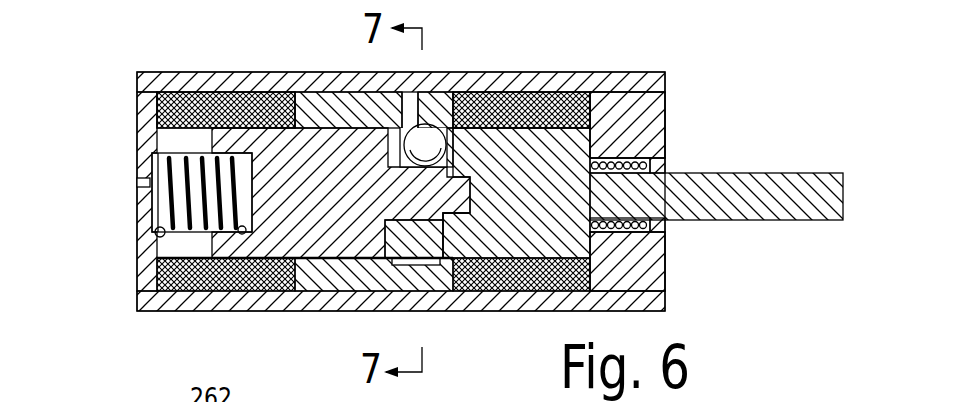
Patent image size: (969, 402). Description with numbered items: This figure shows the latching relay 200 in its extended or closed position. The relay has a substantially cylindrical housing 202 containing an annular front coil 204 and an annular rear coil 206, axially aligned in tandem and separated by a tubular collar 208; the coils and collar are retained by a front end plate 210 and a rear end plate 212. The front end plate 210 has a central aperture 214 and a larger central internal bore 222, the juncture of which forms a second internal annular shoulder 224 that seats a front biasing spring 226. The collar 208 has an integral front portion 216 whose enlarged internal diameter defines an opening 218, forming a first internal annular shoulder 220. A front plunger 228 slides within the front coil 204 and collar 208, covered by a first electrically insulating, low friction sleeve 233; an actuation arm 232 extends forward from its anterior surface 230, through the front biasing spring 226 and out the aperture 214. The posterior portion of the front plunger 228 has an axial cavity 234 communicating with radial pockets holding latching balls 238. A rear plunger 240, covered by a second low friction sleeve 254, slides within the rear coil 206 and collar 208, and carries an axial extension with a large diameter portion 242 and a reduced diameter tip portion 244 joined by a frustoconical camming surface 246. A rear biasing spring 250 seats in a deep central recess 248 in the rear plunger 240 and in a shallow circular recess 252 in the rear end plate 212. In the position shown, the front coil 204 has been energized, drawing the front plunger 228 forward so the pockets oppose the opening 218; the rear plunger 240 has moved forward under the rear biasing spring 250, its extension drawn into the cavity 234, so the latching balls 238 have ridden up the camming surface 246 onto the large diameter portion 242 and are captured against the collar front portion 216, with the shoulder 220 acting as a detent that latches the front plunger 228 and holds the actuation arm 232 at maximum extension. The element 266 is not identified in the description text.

The latching relay 200 is at (133, 46).
The housing 202 is at (665, 95).
The front coil 204 is at (577, 105).
The rear coil 206 is at (173, 92).
The tubular collar 208 is at (313, 100).
The front end plate 210 is at (667, 173).
The rear end plate 212 is at (137, 143).
The central aperture 214 is at (652, 172).
The collar front portion 216 is at (430, 103).
The opening 218 is at (452, 263).
The first internal annular shoulder 220 is at (397, 263).
The central internal bore 222 is at (663, 278).
The second internal annular shoulder 224 is at (640, 233).
The front biasing spring 226 is at (608, 233).
The front plunger 228 is at (542, 237).
The anterior surface 230 is at (613, 140).
The actuation rod or arm 232 is at (753, 178).
The first electrically insulating, low friction sleeve 233 is at (563, 100).
The axial cavity 234 is at (458, 133).
The latching ball 238 is at (404, 112).
The rear plunger 240 is at (293, 220).
The large diameter portion 242 is at (410, 157).
The reduced diameter tip portion 244 is at (457, 215).
The frustoconical camming surface 246 is at (462, 222).
The central recess 248 is at (235, 220).
The rear biasing spring 250 is at (190, 227).
The shallow circular recess 252 is at (153, 236).
The second electrically insulating, low friction sleeve 254 is at (232, 92).
The vent passage 266 is at (140, 195).